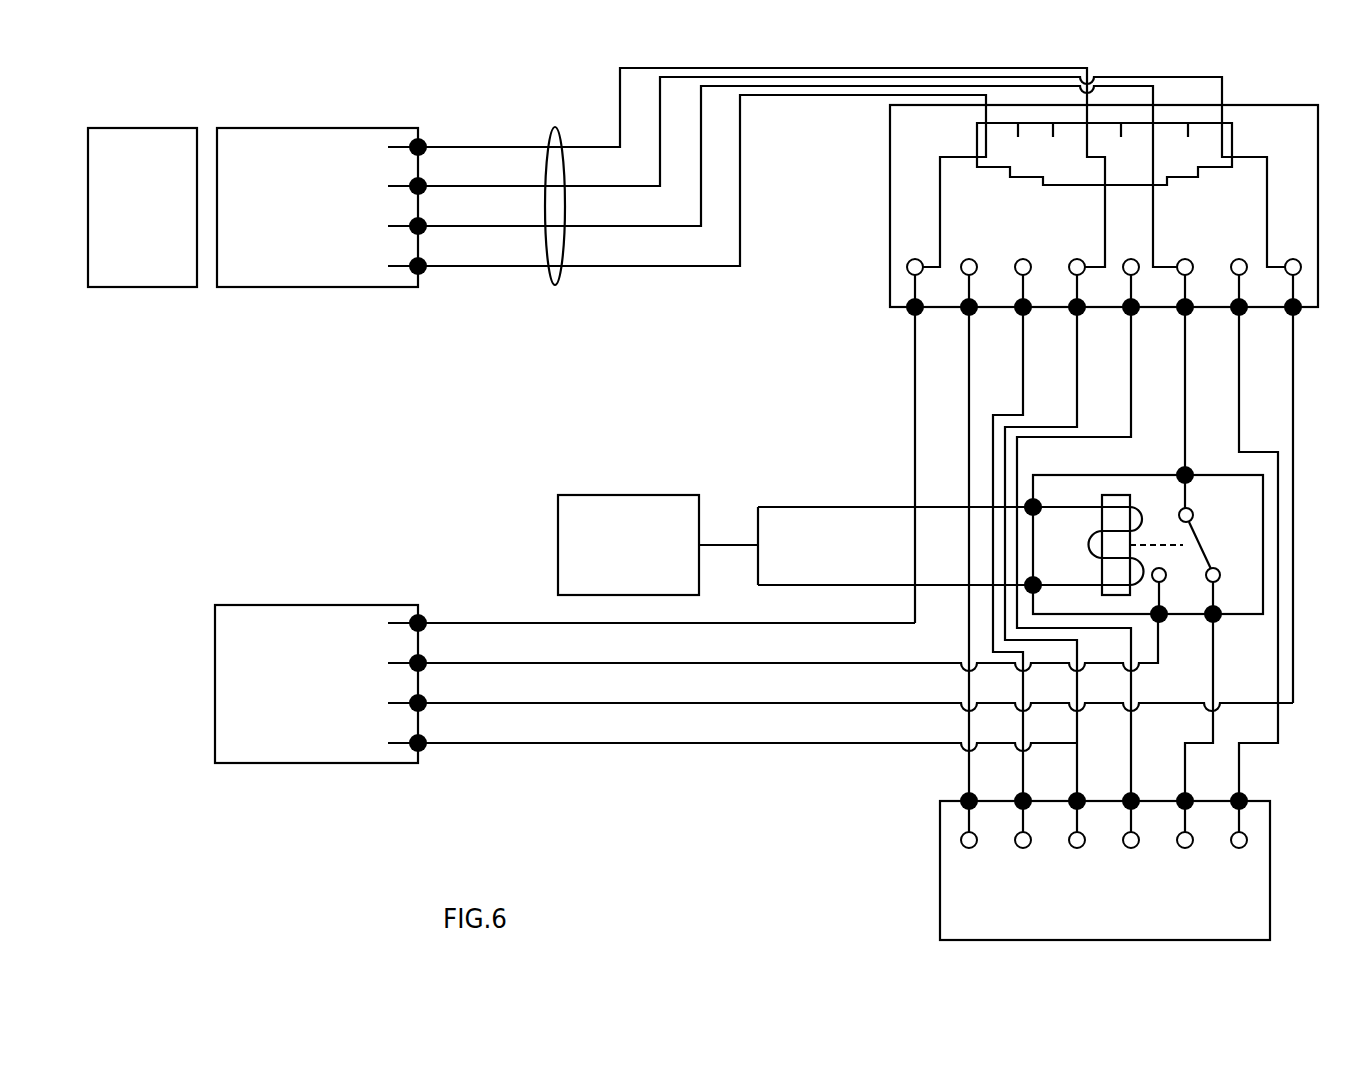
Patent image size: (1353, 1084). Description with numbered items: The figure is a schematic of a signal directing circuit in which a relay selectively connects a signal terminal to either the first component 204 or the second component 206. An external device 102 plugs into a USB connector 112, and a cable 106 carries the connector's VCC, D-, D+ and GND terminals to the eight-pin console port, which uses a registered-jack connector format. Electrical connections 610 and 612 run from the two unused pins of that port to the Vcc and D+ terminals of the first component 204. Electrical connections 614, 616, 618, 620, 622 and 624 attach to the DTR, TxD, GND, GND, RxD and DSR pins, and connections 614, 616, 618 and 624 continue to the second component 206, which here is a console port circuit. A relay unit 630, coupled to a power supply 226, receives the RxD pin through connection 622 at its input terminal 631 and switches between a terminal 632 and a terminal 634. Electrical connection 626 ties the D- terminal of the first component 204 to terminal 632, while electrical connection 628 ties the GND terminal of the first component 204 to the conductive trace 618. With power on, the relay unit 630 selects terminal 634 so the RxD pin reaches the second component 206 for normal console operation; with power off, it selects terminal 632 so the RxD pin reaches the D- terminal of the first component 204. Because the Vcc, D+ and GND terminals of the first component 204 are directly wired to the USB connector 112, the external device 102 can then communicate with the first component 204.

The external device 102 is at (167, 289).
The USB connector 112 is at (312, 289).
The cable 106 is at (548, 270).
The electrical connection 610 is at (912, 365).
The electrical connection 612 is at (1290, 365).
The electrical connection 614 is at (966, 365).
The electrical connection 616 is at (1020, 365).
The electrical connection 618 is at (1074, 365).
The electrical connection 620 is at (1128, 365).
The electrical connection 622 is at (1182, 365).
The electrical connection 624 is at (1236, 365).
The power supply 226 is at (628, 495).
The relay unit 630 is at (1040, 475).
The input terminal 631 is at (1193, 517).
The terminal 632 is at (1166, 575).
The terminal 634 is at (1220, 575).
The first component 204 is at (312, 763).
The second component 206 is at (940, 870).
The electrical connection 626 is at (548, 663).
The electrical connection 628 is at (520, 743).